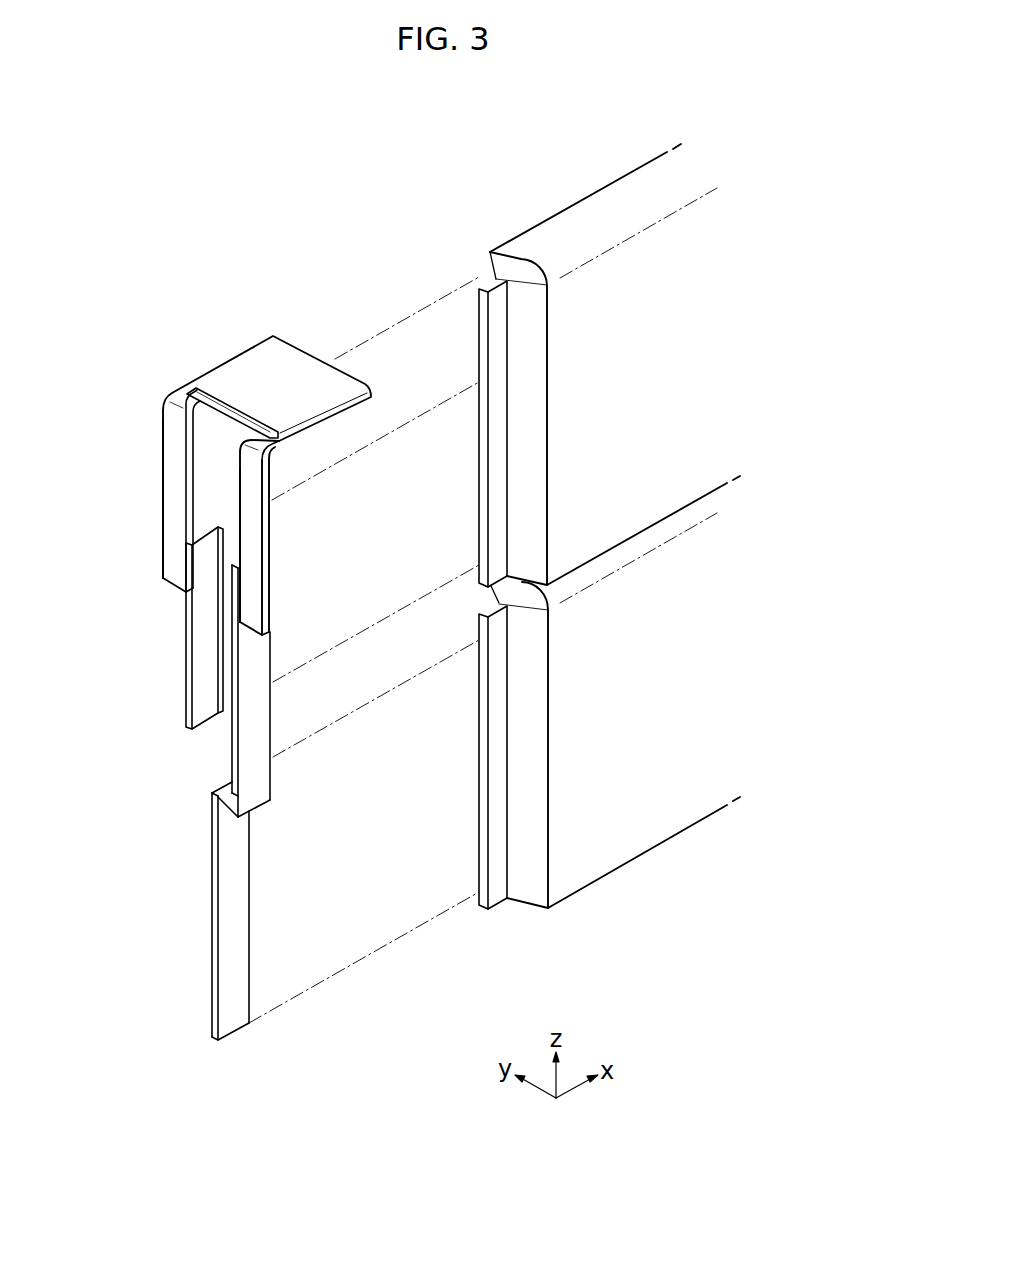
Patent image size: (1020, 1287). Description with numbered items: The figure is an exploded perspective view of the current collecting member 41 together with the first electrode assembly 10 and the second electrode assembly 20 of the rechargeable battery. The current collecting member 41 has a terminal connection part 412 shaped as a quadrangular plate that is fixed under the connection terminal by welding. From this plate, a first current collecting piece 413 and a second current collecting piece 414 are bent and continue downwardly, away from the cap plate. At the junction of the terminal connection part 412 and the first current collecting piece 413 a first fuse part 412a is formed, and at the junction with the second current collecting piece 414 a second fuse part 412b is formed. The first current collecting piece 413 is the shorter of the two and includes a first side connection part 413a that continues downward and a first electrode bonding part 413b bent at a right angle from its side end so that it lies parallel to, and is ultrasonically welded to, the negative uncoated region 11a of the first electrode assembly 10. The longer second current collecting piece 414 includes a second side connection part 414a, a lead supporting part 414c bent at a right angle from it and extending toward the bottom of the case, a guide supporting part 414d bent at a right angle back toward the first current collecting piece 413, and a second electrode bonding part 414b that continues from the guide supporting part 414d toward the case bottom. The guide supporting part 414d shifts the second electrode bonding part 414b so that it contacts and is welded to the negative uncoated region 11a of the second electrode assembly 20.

The first electrode assembly 10 is at (598, 176).
The second electrode assembly 20 is at (655, 862).
The negative uncoated region 11a is at (500, 495).
The current collecting member 41 is at (240, 333).
The terminal connection part 412 is at (281, 357).
The first fuse part 412a is at (187, 388).
The second fuse part 412b is at (281, 440).
The first current collecting piece 413 is at (156, 459).
The first side connection part 413a is at (172, 524).
The first electrode bonding part 413b is at (207, 651).
The second current collecting piece 414 is at (282, 536).
The second side connection part 414a is at (254, 585).
The second electrode bonding part 414b is at (232, 920).
The lead supporting part 414c is at (255, 738).
The guide supporting part 414d is at (228, 792).